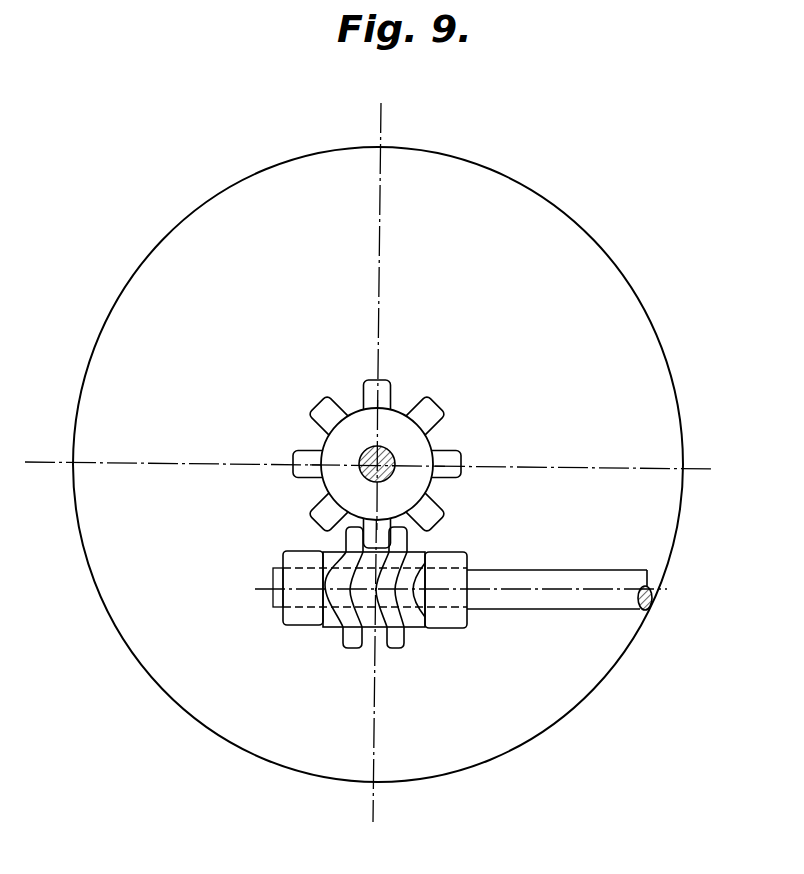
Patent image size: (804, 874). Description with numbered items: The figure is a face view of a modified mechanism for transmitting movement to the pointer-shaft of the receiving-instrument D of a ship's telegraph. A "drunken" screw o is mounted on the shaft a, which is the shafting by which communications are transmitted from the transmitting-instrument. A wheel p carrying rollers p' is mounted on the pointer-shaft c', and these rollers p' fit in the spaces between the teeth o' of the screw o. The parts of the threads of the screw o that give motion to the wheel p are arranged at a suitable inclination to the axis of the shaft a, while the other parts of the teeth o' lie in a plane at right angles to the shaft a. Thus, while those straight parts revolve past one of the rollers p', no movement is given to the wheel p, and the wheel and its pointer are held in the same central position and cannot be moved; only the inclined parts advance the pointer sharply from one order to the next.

The receiving-instrument D is at (378, 464).
The wheel p is at (399, 464).
The rollers p' is at (373, 453).
The pointer-shaft c' is at (394, 428).
The drunken screw o is at (375, 603).
The teeth o' is at (389, 599).
The shaft a is at (273, 580).